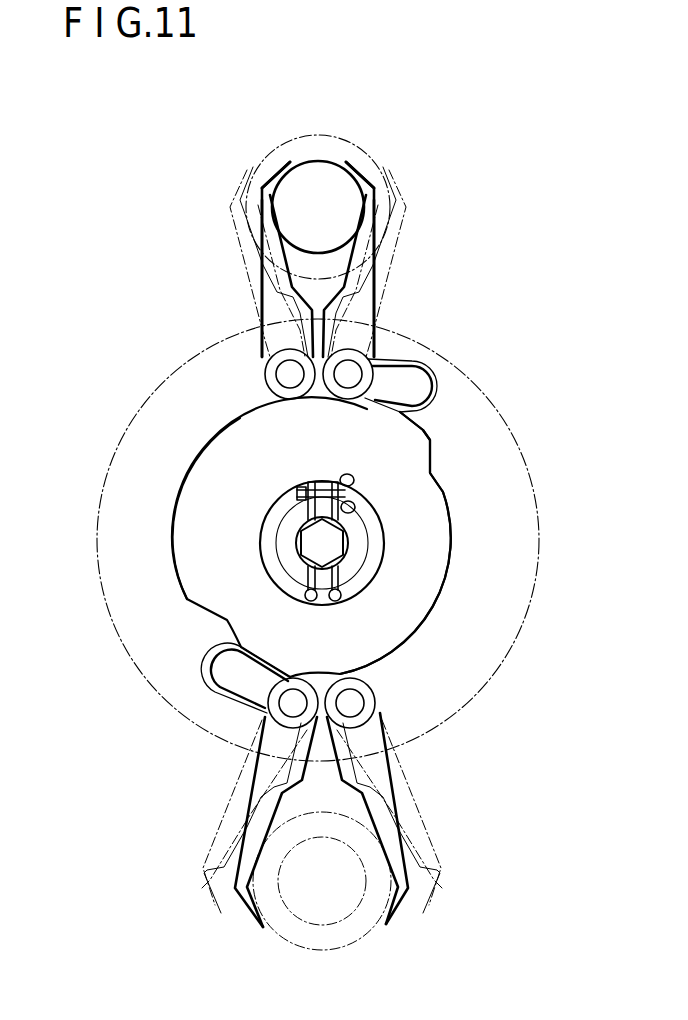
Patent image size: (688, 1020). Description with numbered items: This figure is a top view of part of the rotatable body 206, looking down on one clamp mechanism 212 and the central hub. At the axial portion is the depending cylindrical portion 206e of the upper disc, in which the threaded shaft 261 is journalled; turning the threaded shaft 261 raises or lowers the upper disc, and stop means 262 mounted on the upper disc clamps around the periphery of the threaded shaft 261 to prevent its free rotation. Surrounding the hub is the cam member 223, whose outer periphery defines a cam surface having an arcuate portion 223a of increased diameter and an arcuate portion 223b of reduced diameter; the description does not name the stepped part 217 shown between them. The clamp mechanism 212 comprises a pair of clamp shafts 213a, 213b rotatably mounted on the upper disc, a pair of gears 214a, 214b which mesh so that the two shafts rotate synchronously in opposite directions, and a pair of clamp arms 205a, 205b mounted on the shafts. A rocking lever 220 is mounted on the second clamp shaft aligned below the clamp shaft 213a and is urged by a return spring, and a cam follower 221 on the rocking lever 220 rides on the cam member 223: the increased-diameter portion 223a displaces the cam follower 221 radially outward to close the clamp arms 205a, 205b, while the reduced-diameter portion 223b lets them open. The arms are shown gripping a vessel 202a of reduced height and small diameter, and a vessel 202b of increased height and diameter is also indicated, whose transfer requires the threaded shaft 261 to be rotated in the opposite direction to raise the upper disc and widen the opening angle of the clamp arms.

The vessel having a reduced height and a small diameter 202a is at (323, 160).
The vessel having an increased height and an increased diameter 202b is at (290, 139).
The clamp arm 205a is at (356, 170).
The clamp arm 205b is at (268, 174).
The clamp mechanism 212 is at (376, 270).
The gear 214a is at (365, 336).
The gear 214b is at (280, 330).
The first clamp shaft 213a is at (352, 375).
The clamp shaft 213b is at (286, 375).
The rocking lever 220 is at (390, 366).
The cam follower 221 is at (440, 403).
The cam member 223 is at (443, 494).
The arcuate portion of an increased diameter 223a is at (204, 447).
The arcuate portion of a reduced diameter 223b is at (436, 612).
The cam step 217 is at (434, 459).
The cylindrical portion 206e is at (272, 512).
The stop means 262 is at (294, 543).
The threaded shaft 261 is at (320, 550).
The rotatable body 206 is at (178, 722).